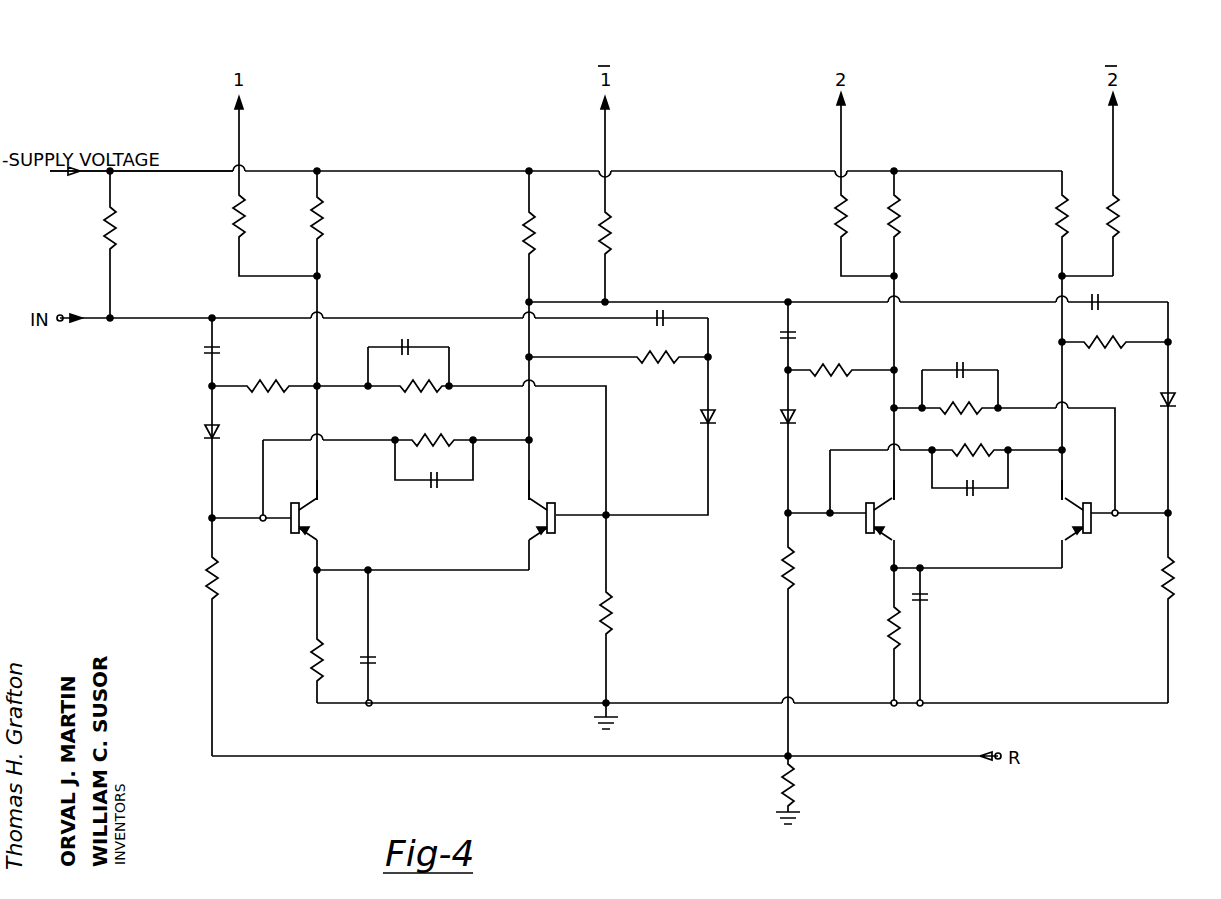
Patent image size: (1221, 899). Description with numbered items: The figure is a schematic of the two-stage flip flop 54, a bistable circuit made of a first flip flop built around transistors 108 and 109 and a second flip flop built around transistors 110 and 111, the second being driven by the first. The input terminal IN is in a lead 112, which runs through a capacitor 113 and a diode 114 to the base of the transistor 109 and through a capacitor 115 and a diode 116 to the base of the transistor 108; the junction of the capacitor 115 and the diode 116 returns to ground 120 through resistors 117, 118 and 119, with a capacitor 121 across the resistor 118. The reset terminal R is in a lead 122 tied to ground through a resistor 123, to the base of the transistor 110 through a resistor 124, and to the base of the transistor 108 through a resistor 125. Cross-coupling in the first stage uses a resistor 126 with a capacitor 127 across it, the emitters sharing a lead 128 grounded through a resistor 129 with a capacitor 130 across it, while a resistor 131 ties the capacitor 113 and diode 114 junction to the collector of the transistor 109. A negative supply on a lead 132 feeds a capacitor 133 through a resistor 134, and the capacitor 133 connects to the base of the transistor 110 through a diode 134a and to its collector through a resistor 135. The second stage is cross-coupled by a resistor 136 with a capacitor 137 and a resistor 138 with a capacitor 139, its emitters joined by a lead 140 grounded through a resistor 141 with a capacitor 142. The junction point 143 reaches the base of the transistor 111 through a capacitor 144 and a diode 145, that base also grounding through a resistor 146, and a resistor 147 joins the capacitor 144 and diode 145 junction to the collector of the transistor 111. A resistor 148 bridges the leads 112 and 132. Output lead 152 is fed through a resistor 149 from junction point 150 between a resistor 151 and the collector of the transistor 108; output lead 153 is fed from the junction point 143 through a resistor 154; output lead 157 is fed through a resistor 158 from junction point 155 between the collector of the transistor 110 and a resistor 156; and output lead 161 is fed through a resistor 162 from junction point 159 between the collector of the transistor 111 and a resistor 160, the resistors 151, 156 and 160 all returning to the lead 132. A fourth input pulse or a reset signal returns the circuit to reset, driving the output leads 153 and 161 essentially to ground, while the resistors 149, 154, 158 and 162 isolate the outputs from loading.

The two-stage flip flop 54 is at (192, 464).
The transistor 108 is at (310, 511).
The transistor 109 is at (530, 511).
The transistor 110 is at (884, 512).
The transistor 111 is at (1069, 511).
The lead 112 is at (140, 318).
The capacitor 113 is at (658, 323).
The diode 114 is at (694, 410).
The capacitor 115 is at (204, 352).
The diode 116 is at (209, 425).
The resistor 117 is at (266, 384).
The resistor 118 is at (401, 390).
The resistor 119 is at (600, 610).
The ground 120 is at (612, 728).
The capacitor 121 is at (405, 354).
The lead 122 is at (848, 759).
The resistor 123 is at (793, 782).
The resistor 124 is at (784, 565).
The resistor 125 is at (216, 566).
The resistor 126 is at (429, 440).
The capacitor 127 is at (441, 488).
The lead 128 is at (420, 573).
The resistor 129 is at (312, 658).
The capacitor 130 is at (372, 664).
The resistor 131 is at (658, 365).
The lead 132 is at (176, 172).
The capacitor 133 is at (795, 339).
The resistor 134 is at (520, 234).
The diode 134a is at (777, 412).
The resistor 135 is at (822, 376).
The resistor 136 is at (965, 454).
The capacitor 137 is at (967, 492).
The resistor 138 is at (958, 416).
The capacitor 139 is at (961, 369).
The lead 140 is at (991, 574).
The resistor 141 is at (882, 622).
The capacitor 142 is at (924, 606).
The junction point 143 is at (533, 306).
The capacitor 144 is at (1100, 304).
The diode 145 is at (1160, 396).
The resistor 146 is at (1160, 576).
The resistor 147 is at (1108, 354).
The resistor 148 is at (105, 240).
The resistor 149 is at (240, 225).
The junction point 150 is at (321, 277).
The resistor 151 is at (323, 211).
The output lead 152 is at (242, 158).
The output lead 153 is at (606, 159).
The resistor 154 is at (616, 234).
The junction point 155 is at (898, 278).
The resistor 156 is at (900, 234).
The output lead 157 is at (843, 132).
The resistor 158 is at (830, 234).
The junction point 159 is at (1056, 278).
The resistor 160 is at (1055, 234).
The output lead 161 is at (1114, 159).
The resistor 162 is at (1118, 234).